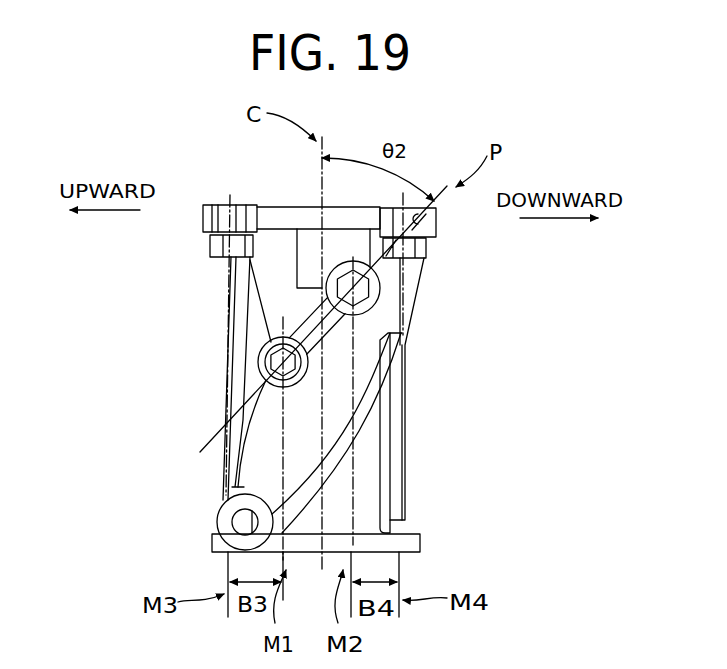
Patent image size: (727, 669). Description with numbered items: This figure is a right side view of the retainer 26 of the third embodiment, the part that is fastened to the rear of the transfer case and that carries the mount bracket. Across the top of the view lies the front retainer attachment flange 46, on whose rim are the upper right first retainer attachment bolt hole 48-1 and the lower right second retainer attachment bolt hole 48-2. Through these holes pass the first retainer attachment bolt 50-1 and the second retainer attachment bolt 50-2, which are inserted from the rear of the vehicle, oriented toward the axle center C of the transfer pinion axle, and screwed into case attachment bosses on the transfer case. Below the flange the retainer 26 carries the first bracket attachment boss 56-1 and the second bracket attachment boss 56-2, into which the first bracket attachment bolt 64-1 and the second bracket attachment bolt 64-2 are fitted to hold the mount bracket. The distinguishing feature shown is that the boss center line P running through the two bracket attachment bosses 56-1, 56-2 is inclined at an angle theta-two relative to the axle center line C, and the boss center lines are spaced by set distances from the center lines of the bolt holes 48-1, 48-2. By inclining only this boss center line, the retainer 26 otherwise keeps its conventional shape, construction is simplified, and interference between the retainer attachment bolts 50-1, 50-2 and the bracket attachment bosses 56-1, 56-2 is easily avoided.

The retainer 26 is at (214, 475).
The front retainer attachment flange 46 is at (206, 203).
The NO. 1 retainer attachment bolt hole 48-1 is at (230, 200).
The NO. 2 retainer attachment bolt hole 48-2 is at (436, 231).
The NO. 1 retainer attachment bolt 50-1 is at (210, 246).
The NO. 2 retainer attachment bolt 50-2 is at (427, 259).
The NO. 1 bracket attachment boss 56-1 is at (259, 369).
The NO. 2 bracket attachment boss 56-2 is at (368, 316).
The NO. 1 bracket attachment bolt 64-1 is at (262, 351).
The NO. 2 bracket attachment bolt 64-2 is at (380, 294).